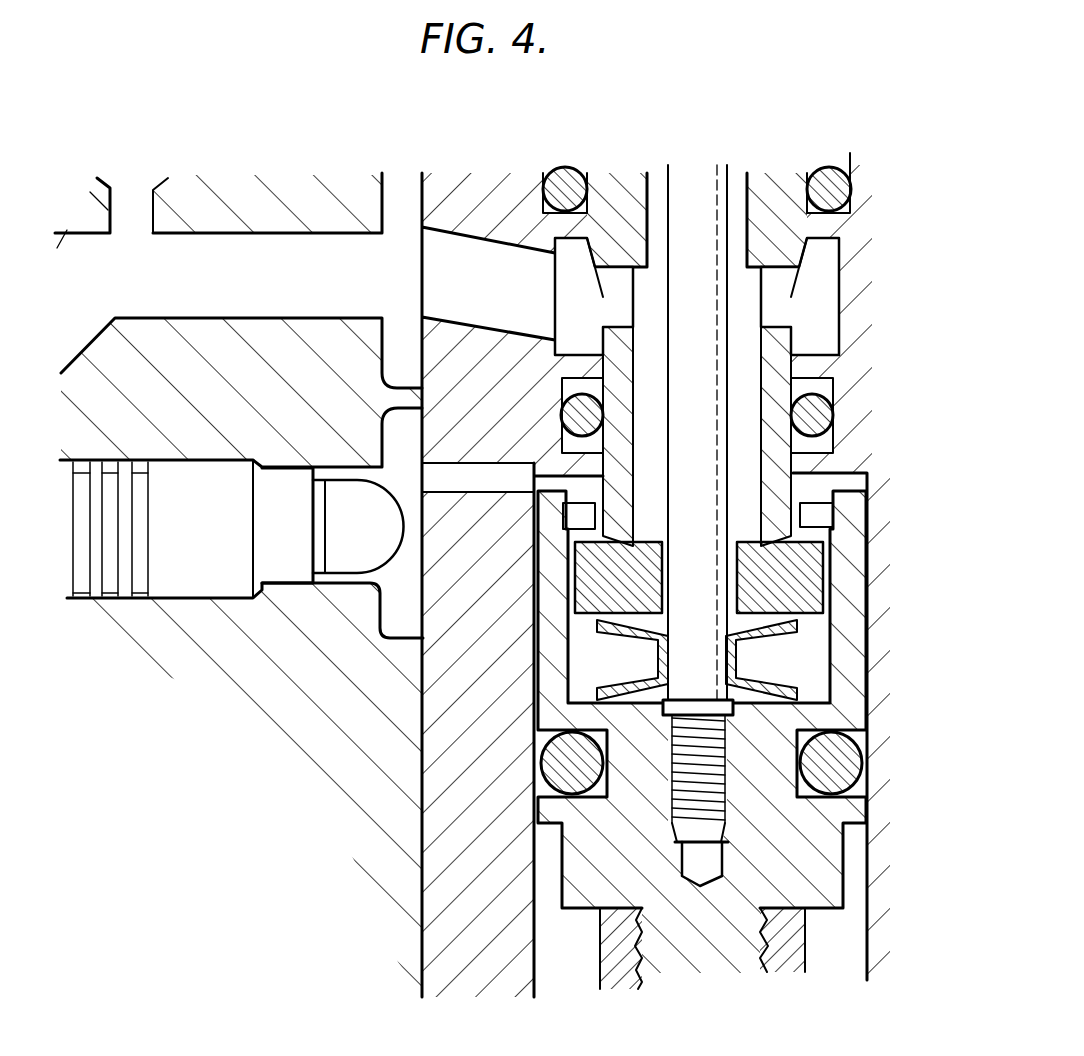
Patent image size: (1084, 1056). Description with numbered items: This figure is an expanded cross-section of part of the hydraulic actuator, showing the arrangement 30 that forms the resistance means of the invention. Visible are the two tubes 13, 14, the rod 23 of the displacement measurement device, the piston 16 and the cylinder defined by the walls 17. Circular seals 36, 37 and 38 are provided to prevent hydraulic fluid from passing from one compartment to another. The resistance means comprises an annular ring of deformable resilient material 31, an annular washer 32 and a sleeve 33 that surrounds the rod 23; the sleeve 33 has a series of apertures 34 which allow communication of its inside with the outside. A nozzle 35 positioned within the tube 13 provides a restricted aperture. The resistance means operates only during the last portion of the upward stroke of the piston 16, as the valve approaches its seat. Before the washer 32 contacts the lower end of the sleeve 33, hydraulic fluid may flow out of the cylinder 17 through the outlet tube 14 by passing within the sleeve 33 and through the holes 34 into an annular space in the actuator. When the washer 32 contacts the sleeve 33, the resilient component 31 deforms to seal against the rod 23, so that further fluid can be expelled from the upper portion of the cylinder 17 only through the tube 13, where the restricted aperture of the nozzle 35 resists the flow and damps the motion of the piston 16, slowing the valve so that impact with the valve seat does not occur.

The tube 13 is at (350, 578).
The tube 14 is at (267, 248).
The piston 16 is at (823, 875).
The walls 17 is at (437, 940).
The rod 23 is at (700, 257).
The valve actuator assembly 30 is at (822, 977).
The annular ring of deformable resilient material 31 is at (793, 680).
The annular washer 32 is at (802, 582).
The sleeve 33 is at (772, 380).
The apertures 34 is at (613, 288).
The nozzle 35 is at (188, 586).
The circular seal 36 is at (547, 170).
The circular seal 37 is at (836, 418).
The circular seal 38 is at (864, 757).